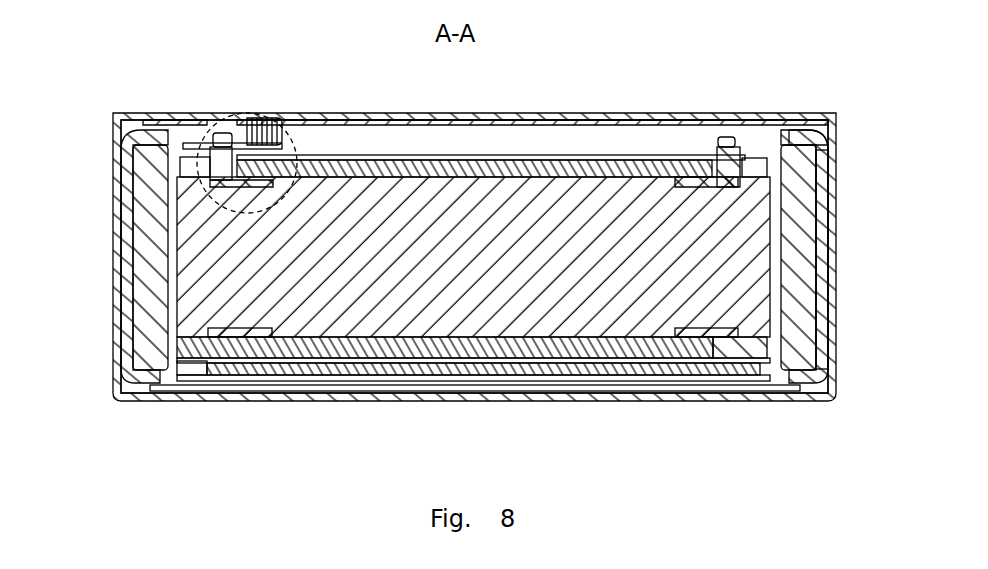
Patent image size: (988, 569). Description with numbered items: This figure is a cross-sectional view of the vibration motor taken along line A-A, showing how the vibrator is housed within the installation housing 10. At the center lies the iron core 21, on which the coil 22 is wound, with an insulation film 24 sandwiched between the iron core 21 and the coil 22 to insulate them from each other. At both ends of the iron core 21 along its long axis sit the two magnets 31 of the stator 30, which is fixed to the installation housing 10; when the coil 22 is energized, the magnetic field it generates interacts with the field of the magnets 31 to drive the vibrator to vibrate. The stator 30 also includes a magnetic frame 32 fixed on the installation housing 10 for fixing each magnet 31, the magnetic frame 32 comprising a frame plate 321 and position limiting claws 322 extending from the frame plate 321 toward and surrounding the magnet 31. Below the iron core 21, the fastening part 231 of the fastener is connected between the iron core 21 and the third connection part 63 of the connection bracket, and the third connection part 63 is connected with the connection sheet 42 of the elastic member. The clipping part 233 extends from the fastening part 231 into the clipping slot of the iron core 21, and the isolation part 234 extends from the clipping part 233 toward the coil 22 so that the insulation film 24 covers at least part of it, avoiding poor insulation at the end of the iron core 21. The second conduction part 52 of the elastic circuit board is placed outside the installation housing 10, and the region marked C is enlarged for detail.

The installation housing 10 is at (253, 396).
The iron core 21 is at (428, 207).
The coil 22 is at (583, 160).
The insulation film 24 is at (512, 170).
The stator 30 is at (66, 185).
The magnet 31 is at (152, 210).
The magnetic frame 32 is at (123, 247).
The frame plate 321 is at (819, 197).
The position limiting claw 322 is at (802, 134).
The connection sheet 42 is at (430, 370).
The second conduction part 52 is at (255, 120).
The third connection part 63 is at (520, 360).
The fastening part 231 is at (737, 345).
The clipping part 233 is at (730, 180).
The isolation part 234 is at (692, 172).
The detail C is at (287, 150).